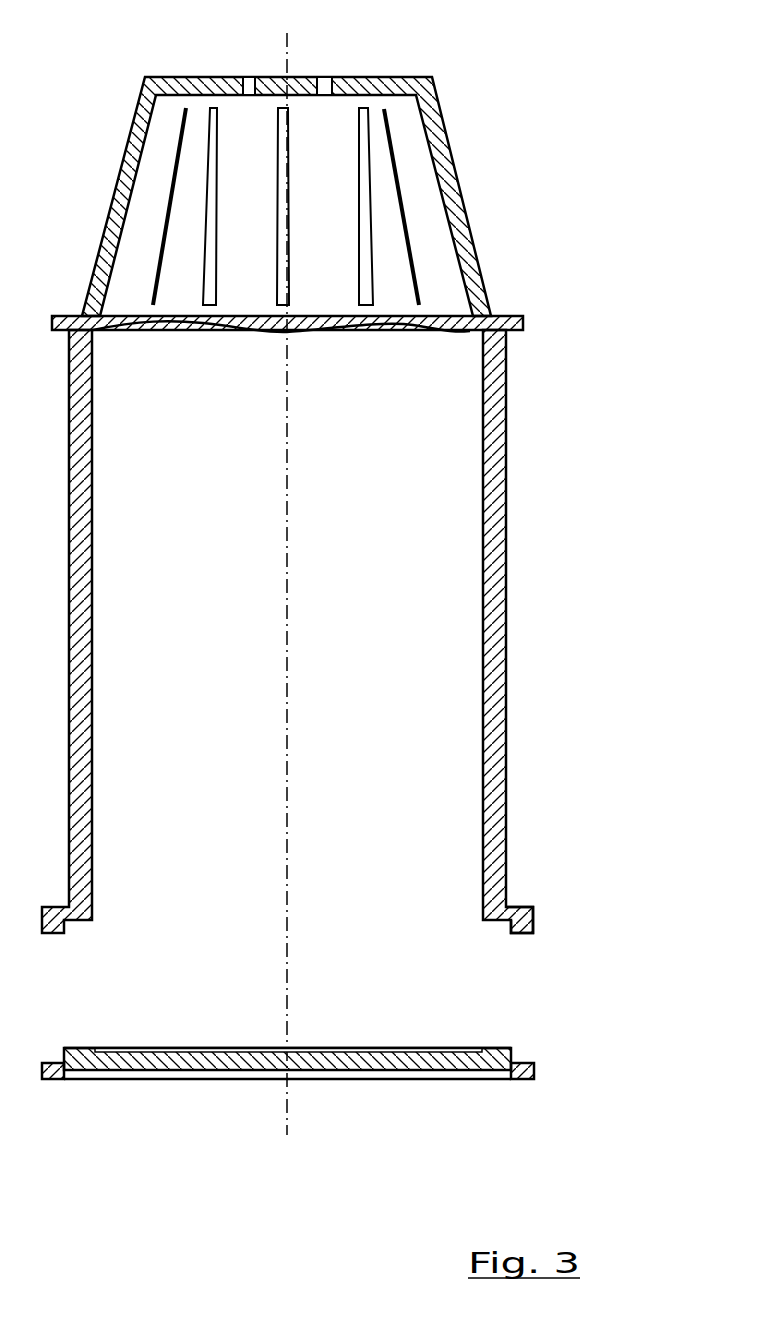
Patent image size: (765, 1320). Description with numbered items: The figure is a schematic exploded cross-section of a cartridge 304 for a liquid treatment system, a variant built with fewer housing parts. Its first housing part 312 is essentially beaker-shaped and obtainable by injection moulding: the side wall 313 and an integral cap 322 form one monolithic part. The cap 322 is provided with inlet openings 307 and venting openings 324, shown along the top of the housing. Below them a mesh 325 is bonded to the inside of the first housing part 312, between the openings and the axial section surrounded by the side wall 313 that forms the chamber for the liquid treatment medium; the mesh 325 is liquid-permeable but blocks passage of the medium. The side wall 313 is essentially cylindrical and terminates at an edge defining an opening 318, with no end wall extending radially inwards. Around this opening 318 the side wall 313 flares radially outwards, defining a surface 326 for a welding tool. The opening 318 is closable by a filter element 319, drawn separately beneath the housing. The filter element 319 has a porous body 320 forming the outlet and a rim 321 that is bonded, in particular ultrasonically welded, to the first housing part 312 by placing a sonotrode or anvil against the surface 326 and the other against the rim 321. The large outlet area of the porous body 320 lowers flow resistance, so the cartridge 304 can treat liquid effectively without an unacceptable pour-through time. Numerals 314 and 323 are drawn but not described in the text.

The cartridge 304 is at (333, 179).
The central axis 314 is at (288, 67).
The venting openings 324 is at (352, 77).
The cap 322 is at (465, 164).
The inlet openings 307 is at (366, 275).
The mesh 325 is at (320, 332).
The flange 323 is at (520, 315).
The first housing part 312 is at (340, 604).
The side wall 313 is at (505, 717).
The surface 326 is at (518, 910).
The opening 318 is at (366, 933).
The filter element 319 is at (330, 1033).
The porous body 320 is at (202, 1050).
The rim 321 is at (518, 1063).